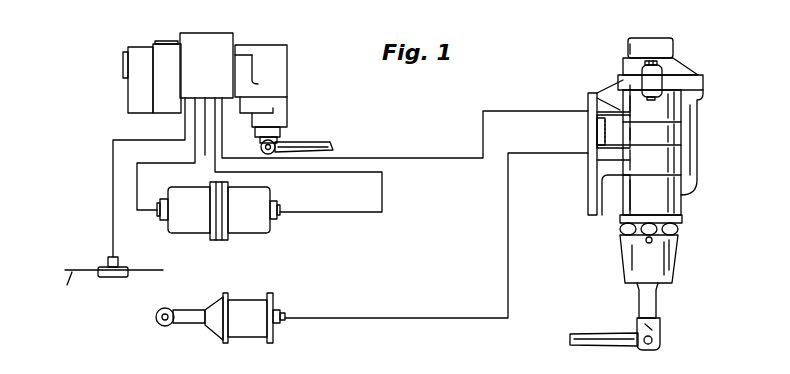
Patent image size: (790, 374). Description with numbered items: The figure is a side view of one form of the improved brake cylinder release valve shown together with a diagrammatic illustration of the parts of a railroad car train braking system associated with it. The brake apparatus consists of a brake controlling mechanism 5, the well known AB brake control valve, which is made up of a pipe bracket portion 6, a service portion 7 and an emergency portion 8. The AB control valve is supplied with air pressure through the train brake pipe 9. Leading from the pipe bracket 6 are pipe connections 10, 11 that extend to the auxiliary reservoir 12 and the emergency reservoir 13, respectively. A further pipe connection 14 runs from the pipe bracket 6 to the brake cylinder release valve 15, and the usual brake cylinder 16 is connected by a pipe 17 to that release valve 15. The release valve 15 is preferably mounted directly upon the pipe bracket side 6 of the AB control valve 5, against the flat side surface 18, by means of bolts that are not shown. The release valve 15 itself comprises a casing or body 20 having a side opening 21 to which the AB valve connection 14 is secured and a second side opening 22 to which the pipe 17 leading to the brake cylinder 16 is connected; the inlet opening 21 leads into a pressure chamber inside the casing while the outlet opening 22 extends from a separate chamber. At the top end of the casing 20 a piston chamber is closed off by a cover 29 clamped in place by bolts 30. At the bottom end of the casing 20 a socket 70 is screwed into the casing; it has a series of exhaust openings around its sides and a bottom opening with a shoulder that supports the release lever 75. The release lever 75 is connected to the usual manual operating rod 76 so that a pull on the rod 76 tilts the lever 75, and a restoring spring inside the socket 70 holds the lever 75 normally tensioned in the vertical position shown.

The brake controlling mechanism 5 is at (95, 46).
The pipe bracket portion 6 is at (228, 40).
The service portion 7 is at (269, 62).
The emergency portion 8 is at (162, 75).
The train brake pipe 9 is at (113, 217).
The pipe connection 10 is at (137, 178).
The pipe connection 11 is at (383, 188).
The auxiliary reservoir 12 is at (240, 235).
The emergency reservoir 13 is at (193, 235).
The pipe connection 14 is at (437, 158).
The brake cylinder release valve 15 is at (654, 191).
The brake cylinder 16 is at (273, 298).
The pipe 17 is at (450, 318).
The flat side surface 18 is at (587, 195).
The casing 20 is at (687, 182).
The side opening 21 is at (588, 102).
The second side opening 22 is at (587, 158).
The cover 29 is at (660, 45).
The bolts 30 is at (670, 63).
The socket 70 is at (667, 265).
The release lever 75 is at (648, 307).
The manual operating rod 76 is at (322, 140).